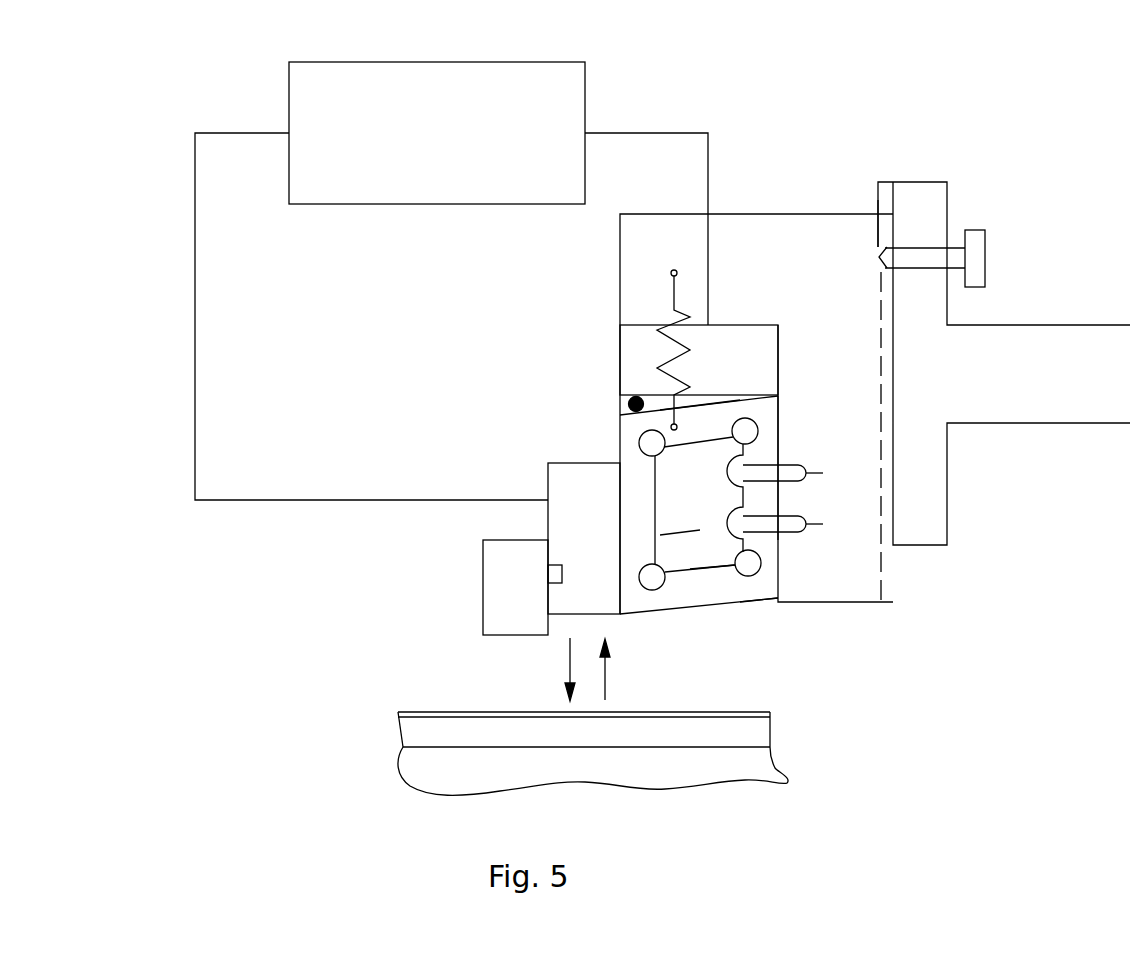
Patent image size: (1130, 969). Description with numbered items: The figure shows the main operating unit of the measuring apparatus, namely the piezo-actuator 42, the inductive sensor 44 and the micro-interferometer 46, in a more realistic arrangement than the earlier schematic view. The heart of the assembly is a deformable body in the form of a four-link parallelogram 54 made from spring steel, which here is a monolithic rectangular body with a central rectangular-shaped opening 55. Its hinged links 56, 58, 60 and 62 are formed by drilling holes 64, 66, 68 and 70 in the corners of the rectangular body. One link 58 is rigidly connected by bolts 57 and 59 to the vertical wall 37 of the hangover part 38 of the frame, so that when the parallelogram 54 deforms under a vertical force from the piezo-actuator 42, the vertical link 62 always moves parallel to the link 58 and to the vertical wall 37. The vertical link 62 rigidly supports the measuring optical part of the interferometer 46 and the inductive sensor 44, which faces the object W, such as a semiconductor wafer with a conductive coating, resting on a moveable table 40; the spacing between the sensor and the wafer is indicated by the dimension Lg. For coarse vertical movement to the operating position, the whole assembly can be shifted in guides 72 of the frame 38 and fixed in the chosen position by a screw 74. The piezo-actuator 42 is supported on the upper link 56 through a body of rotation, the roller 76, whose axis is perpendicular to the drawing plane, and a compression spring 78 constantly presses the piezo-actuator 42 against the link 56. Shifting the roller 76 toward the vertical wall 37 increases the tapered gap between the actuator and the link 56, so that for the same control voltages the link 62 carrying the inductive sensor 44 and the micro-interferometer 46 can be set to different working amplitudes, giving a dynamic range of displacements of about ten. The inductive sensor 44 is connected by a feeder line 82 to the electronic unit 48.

The vertical wall 37 is at (941, 406).
The hangover part 38 is at (1004, 317).
The moveable table 40 is at (565, 803).
The piezo-actuator 42 is at (601, 331).
The inductive sensor 44 is at (333, 600).
The micro-interferometer 46 is at (362, 538).
The electronic unit 48 is at (342, 133).
The four-link parallelogram 54 is at (888, 677).
The central rectangular-shaped opening 55 is at (794, 686).
The link 56 is at (721, 292).
The bolt 57 is at (923, 475).
The link 58 is at (915, 498).
The bolt 59 is at (888, 570).
The link 60 is at (809, 666).
The vertical link 62 is at (571, 501).
The hole 64 is at (806, 174).
The hole 66 is at (561, 454).
The hole 68 is at (736, 705).
The hole 70 is at (884, 623).
The guides 72 is at (792, 259).
The screw 74 is at (994, 241).
The roller 76 is at (504, 354).
The compression spring 78 is at (590, 333).
The feeder line 82 is at (405, 316).
The gap length Lg is at (666, 752).
The object W is at (525, 743).